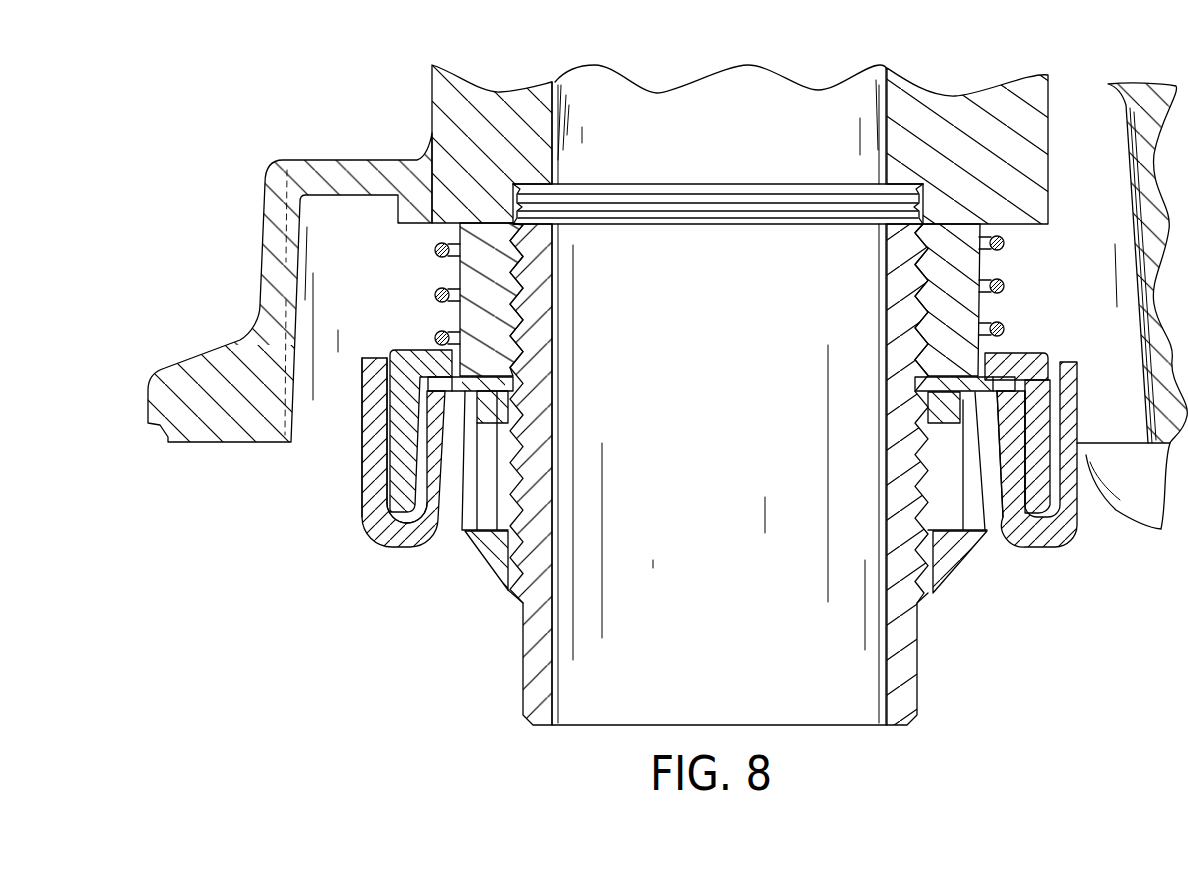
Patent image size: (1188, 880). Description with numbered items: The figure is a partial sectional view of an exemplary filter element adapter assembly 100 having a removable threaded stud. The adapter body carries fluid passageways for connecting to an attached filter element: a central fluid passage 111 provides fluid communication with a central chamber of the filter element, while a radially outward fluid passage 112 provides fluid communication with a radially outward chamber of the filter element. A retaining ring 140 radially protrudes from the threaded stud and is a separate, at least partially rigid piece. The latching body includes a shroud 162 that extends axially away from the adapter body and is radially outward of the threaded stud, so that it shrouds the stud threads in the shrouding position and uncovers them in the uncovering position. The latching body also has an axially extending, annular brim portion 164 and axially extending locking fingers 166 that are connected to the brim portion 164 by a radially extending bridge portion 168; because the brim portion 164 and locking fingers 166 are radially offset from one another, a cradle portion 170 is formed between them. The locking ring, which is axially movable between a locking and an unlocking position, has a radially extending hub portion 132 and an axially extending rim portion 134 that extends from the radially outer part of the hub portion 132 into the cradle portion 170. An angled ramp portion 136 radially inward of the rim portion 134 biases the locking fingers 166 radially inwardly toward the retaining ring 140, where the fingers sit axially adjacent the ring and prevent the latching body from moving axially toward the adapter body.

The filter element adapter assembly 100 is at (183, 140).
The central fluid passage 111 is at (668, 107).
The radially outward fluid passage 112 is at (1078, 92).
The hub portion 132 is at (999, 357).
The rim portion 134 is at (1044, 548).
The ramp portion 136 is at (1032, 402).
The retaining ring 140 is at (995, 387).
The shroud 162 is at (487, 558).
The brim portion 164 is at (370, 467).
The locking finger 166 is at (433, 458).
The bridge portion 168 is at (397, 547).
The cradle portion 170 is at (397, 521).